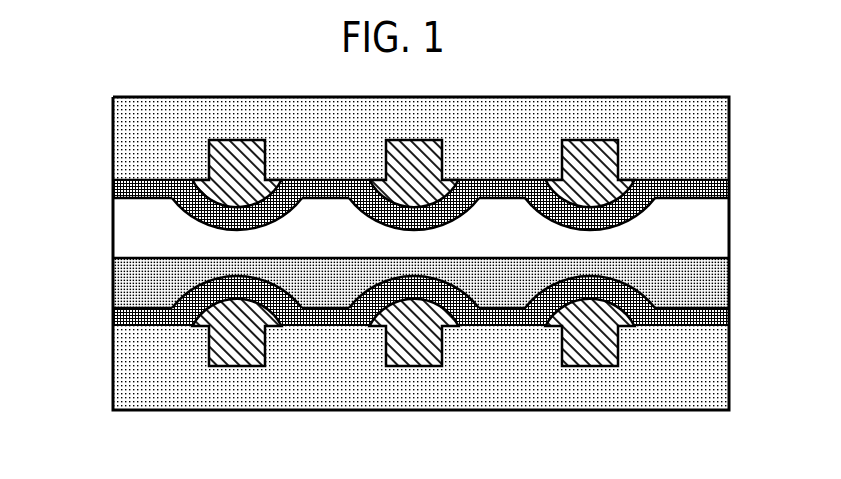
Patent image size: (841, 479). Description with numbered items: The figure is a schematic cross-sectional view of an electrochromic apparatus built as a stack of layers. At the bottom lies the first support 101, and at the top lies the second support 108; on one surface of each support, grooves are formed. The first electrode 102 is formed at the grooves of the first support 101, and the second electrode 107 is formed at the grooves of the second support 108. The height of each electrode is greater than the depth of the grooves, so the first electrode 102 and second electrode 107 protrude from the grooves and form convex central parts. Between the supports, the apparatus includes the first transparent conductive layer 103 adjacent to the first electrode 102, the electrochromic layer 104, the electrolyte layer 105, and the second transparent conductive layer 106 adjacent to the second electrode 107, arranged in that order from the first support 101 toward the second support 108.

The first support 101 is at (122, 370).
The first electrode 102 is at (237, 350).
The first transparent conductive layer 103 is at (124, 317).
The electrochromic layer 104 is at (122, 282).
The electrolyte layer 105 is at (122, 226).
The second transparent conductive layer 106 is at (124, 188).
The second electrode 107 is at (240, 150).
The second support 108 is at (120, 138).